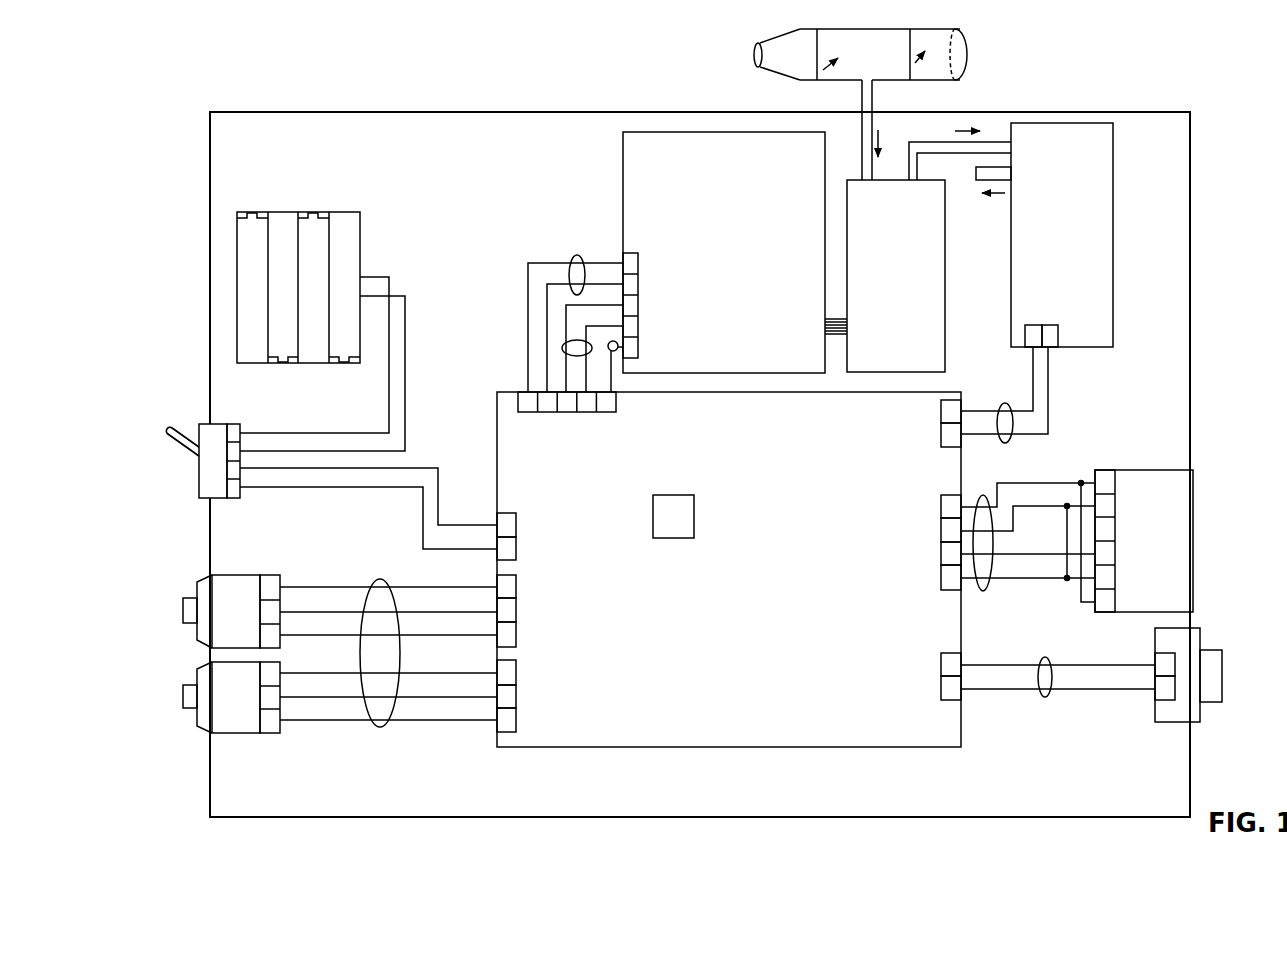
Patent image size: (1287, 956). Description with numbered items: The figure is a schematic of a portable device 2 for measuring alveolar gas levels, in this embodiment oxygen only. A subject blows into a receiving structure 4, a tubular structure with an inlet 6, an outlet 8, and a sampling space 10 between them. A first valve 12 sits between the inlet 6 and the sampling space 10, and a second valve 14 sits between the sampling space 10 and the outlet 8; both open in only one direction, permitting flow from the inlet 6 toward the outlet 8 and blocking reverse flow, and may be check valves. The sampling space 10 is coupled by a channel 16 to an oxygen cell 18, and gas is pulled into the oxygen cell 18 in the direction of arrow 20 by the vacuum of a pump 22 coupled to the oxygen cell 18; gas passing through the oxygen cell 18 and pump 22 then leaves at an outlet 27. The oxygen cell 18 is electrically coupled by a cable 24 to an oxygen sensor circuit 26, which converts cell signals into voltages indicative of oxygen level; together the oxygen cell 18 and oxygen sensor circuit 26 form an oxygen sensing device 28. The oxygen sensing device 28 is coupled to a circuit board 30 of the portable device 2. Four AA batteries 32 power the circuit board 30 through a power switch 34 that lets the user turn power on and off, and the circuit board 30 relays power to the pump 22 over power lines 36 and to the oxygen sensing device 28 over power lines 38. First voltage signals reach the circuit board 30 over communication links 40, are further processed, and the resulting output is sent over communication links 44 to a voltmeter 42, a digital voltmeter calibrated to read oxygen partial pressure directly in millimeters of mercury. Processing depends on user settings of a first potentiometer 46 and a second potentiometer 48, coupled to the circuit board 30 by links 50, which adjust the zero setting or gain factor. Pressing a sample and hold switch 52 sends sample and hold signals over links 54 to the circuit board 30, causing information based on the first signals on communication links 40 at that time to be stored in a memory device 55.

The portable device 2 is at (1166, 95).
The receiving structure 4 is at (858, 44).
The inlet 6 is at (757, 58).
The outlet 8 is at (970, 62).
The sampling space 10 is at (870, 29).
The first valve 12 is at (818, 30).
The second valve 14 is at (912, 30).
The channel 16 is at (873, 103).
The oxygen cell 18 is at (886, 353).
The arrow 20 is at (862, 130).
The pump 22 is at (1048, 157).
The cable 24 is at (831, 317).
The oxygen sensor circuit 26 is at (686, 252).
The outlet 27 is at (971, 200).
The oxygen sensing device 28 is at (612, 184).
The circuit board 30 is at (729, 586).
The batteries 32 is at (361, 241).
The power switch 34 is at (199, 478).
The power lines 36 is at (1005, 403).
The power lines 38 is at (577, 256).
The communication links 40 is at (563, 346).
The voltmeter 42 is at (1182, 468).
The communication links 44 is at (986, 590).
The first potentiometer 46 is at (252, 572).
The second potentiometer 48 is at (250, 736).
The links 50 is at (383, 727).
The sample and hold switch 52 is at (1205, 632).
The links 54 is at (1043, 698).
The memory device 55 is at (697, 517).